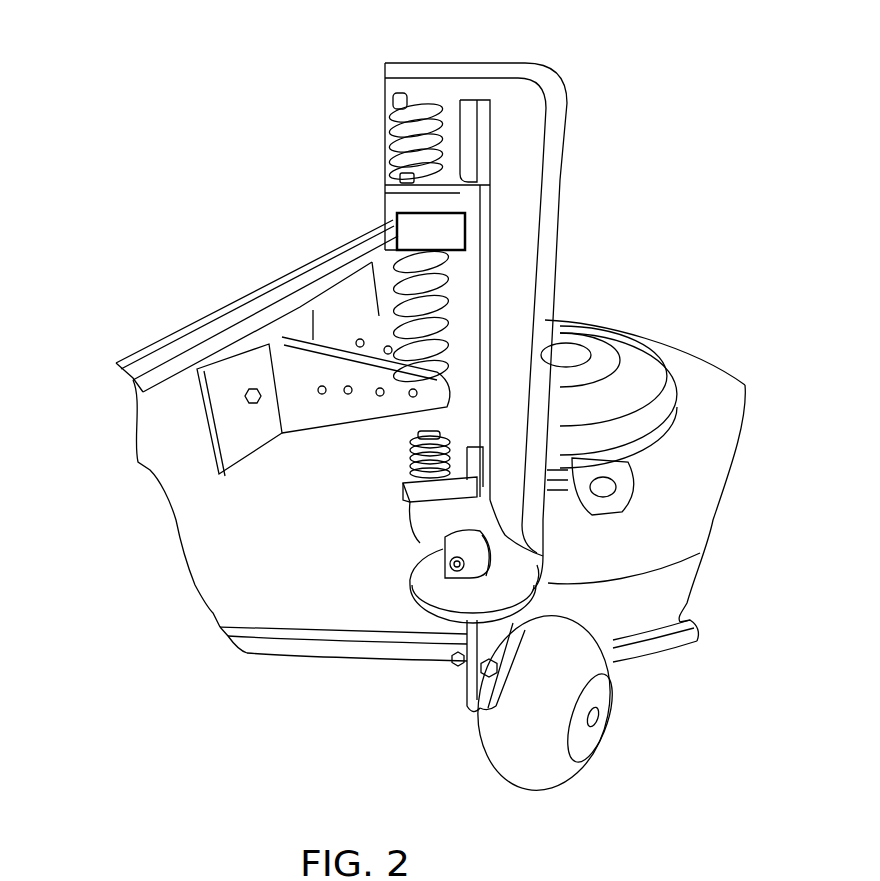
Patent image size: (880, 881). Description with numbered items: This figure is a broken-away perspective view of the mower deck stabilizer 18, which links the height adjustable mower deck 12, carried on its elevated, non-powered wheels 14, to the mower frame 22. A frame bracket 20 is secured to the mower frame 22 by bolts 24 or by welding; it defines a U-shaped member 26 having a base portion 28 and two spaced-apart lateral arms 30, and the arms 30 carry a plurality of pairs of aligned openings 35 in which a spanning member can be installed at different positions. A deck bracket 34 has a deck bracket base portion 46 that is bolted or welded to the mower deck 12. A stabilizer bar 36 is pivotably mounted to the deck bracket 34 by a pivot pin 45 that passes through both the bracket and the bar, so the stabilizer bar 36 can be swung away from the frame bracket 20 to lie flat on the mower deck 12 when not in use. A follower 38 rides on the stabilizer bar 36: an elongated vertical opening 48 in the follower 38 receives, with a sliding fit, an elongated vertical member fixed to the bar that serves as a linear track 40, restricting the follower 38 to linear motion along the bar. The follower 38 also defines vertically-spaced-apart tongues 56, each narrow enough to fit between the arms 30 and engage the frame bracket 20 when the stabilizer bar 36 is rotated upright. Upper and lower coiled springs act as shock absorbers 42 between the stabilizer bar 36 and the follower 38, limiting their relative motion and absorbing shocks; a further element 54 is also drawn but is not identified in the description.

The mower deck 12 is at (672, 538).
The wheels 14 is at (550, 780).
The mower deck stabilizer 18 is at (569, 299).
The frame bracket 20 is at (232, 365).
The mower frame 22 is at (178, 390).
The bolts 24 is at (253, 404).
The U-shaped member 26 is at (334, 332).
The base portion 28 is at (306, 332).
The lateral arms 30 is at (361, 315).
The deck bracket 34 is at (426, 588).
The aligned openings 35 is at (358, 348).
The stabilizer bar 36 is at (552, 107).
The follower 38 is at (488, 225).
The linear track 40 is at (468, 147).
The shock absorbers 42 is at (437, 127).
The pivot pin 45 is at (450, 563).
The deck bracket base portion 46 is at (513, 586).
The elongated vertical opening 48 is at (475, 178).
The compression spring 54 is at (420, 205).
The tongues 56 is at (393, 268).